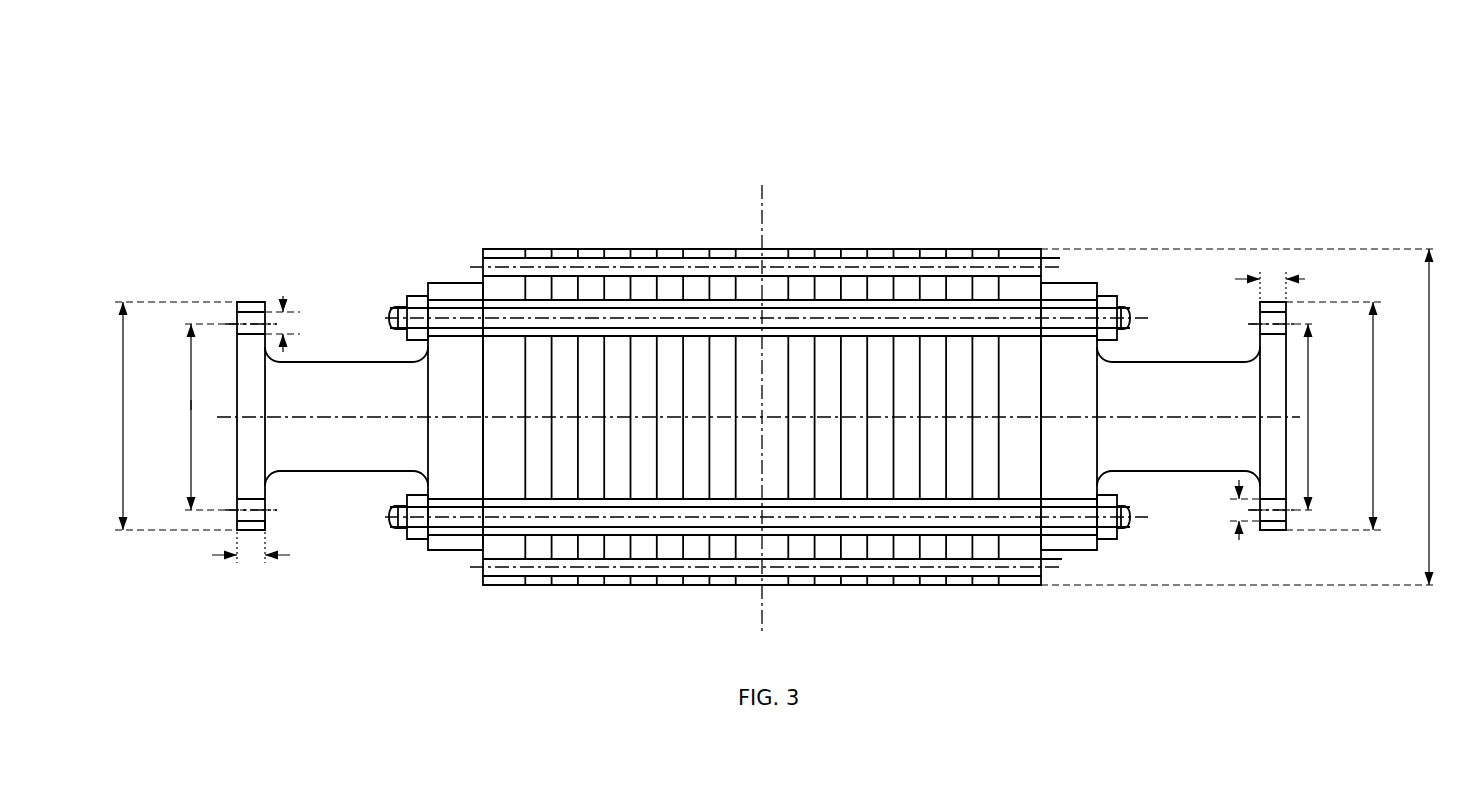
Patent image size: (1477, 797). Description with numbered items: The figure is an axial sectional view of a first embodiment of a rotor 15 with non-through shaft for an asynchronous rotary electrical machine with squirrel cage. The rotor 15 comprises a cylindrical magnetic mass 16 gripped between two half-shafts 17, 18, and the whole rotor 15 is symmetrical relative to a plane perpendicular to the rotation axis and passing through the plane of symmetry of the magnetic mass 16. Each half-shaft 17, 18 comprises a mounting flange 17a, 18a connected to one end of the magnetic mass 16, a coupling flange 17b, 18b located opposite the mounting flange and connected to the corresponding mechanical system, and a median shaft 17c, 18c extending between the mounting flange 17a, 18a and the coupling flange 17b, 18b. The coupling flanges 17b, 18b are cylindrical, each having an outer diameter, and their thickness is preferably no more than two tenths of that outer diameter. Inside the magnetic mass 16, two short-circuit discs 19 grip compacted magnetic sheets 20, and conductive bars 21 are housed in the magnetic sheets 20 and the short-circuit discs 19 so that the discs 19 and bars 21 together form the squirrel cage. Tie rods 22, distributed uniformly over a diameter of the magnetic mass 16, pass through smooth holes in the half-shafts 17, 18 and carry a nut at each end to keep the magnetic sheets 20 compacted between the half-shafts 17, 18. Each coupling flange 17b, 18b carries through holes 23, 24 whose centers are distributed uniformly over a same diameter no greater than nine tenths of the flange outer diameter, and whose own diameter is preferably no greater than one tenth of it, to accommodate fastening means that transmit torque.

The rotor with non-through shaft 15 is at (1078, 122).
The cylindrical magnetic mass 16 is at (840, 238).
The half-shaft 17 is at (339, 350).
The mounting flange 17a is at (450, 544).
The coupling flange 17b is at (266, 529).
The median shaft 17c is at (353, 460).
The half-shaft 18 is at (1184, 352).
The mounting flange 18a is at (1075, 542).
The coupling flange 18b is at (1257, 540).
The median shaft 18c is at (1159, 470).
The short-circuit discs 19 is at (498, 243).
The compacted magnetic sheets 20 is at (617, 249).
The conductive bars 21 is at (567, 258).
The tie rods 22 is at (453, 310).
The through holes 23 is at (251, 312).
The through holes 24 is at (1277, 530).